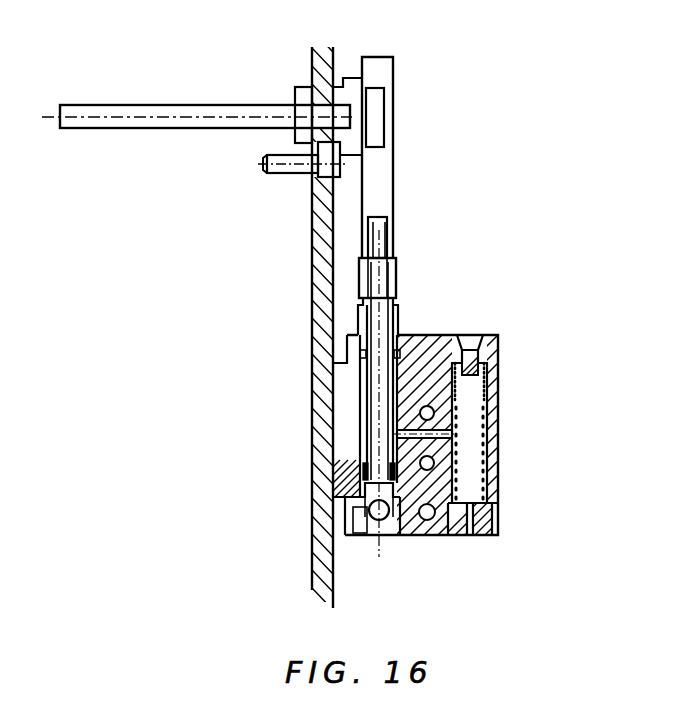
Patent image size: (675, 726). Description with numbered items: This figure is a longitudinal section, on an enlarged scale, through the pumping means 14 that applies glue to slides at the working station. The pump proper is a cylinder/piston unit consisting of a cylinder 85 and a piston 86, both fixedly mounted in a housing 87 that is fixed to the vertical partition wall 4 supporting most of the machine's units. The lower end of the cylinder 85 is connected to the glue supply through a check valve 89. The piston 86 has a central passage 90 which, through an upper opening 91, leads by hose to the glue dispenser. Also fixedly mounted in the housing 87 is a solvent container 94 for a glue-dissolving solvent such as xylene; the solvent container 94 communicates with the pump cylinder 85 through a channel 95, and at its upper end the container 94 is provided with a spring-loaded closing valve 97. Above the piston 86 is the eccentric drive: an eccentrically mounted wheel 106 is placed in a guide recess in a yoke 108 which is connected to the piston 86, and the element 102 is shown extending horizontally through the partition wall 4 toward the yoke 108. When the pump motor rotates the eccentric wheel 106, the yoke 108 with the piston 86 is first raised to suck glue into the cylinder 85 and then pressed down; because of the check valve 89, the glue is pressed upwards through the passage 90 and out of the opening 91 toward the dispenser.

The partition wall 4 is at (317, 305).
The pumping means 14 is at (470, 316).
The cylinder 85 is at (346, 503).
The piston 86 is at (340, 402).
The housing 87 is at (437, 536).
The check valve 89 is at (346, 536).
The central passage 90 is at (381, 331).
The upper opening 91 is at (386, 278).
The solvent container 94 is at (473, 423).
The channel 95 is at (440, 443).
The spring-loaded closing valve 97 is at (490, 351).
The bar 102 is at (182, 106).
The eccentrically mounted wheel 106 is at (377, 110).
The yoke 108 is at (387, 172).